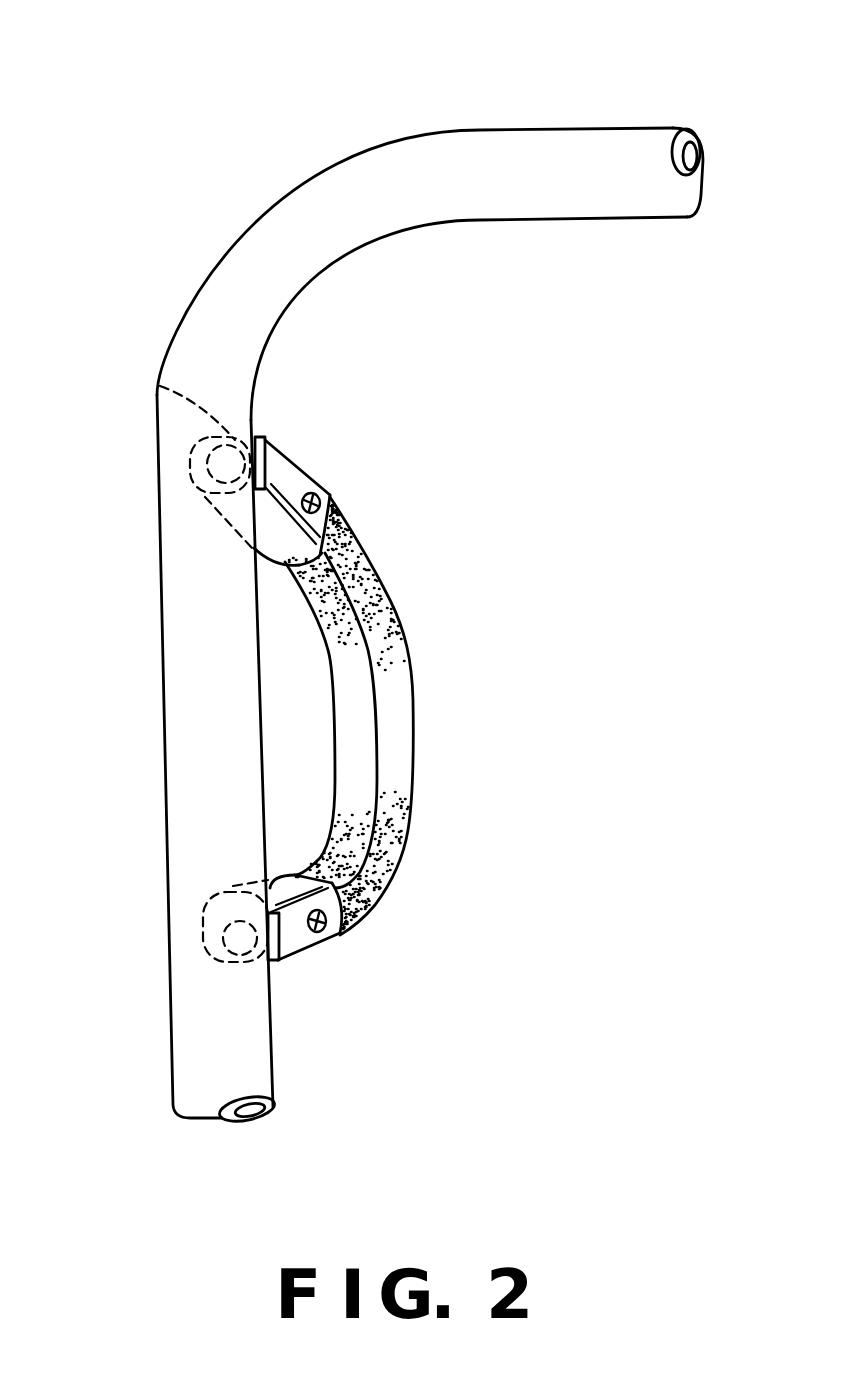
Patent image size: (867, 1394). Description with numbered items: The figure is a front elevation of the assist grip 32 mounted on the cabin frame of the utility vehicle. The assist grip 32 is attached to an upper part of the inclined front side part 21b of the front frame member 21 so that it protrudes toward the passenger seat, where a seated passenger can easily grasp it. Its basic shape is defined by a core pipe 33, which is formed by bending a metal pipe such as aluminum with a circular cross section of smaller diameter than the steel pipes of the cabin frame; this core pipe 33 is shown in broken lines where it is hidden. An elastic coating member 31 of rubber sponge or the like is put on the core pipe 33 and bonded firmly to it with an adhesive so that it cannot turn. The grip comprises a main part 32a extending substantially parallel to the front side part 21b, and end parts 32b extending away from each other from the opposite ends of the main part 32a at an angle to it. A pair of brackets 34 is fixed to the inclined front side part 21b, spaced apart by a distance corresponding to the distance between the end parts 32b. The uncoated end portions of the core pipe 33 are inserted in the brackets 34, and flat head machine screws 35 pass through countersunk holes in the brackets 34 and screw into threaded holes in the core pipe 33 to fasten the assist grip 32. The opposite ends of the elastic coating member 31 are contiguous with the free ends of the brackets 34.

The front frame member 21 is at (526, 126).
The inclined front side part 21b is at (182, 672).
The elastic coating member 31 is at (400, 770).
The assist grip 32 is at (471, 710).
The main part 32a is at (405, 680).
The end parts 32b is at (357, 533).
The core pipe 33 is at (160, 386).
The brackets 34 is at (284, 471).
The flat head machine screws 35 is at (327, 494).